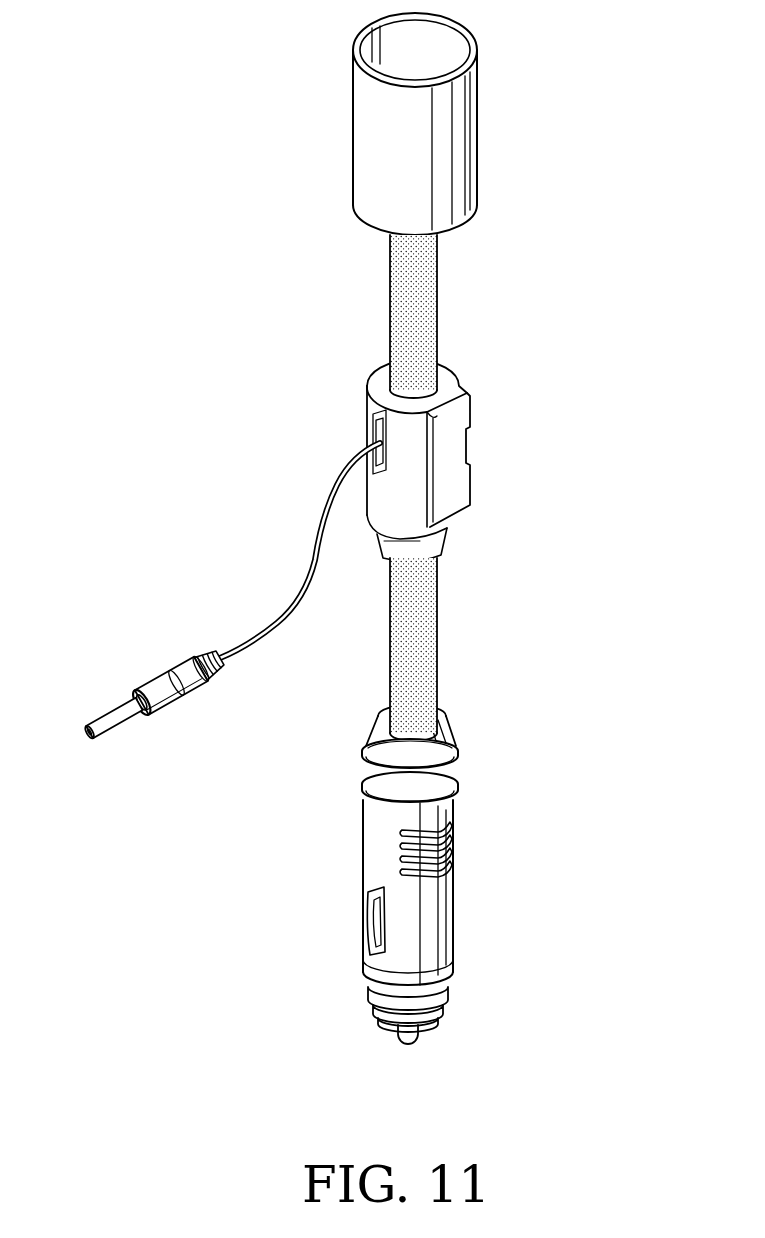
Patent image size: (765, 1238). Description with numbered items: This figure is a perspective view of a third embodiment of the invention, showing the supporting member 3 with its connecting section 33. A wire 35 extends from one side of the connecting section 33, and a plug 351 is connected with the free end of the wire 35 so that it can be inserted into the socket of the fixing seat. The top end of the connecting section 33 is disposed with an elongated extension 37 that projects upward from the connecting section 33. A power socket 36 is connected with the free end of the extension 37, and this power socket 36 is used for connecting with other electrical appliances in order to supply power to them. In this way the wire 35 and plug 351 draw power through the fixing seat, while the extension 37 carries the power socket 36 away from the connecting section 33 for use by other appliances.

The supporting member 3 is at (492, 643).
The connecting section 33 is at (480, 450).
The wire 35 is at (297, 600).
The plug 351 is at (142, 687).
The power socket 36 is at (478, 155).
The elongated extension 37 is at (438, 310).